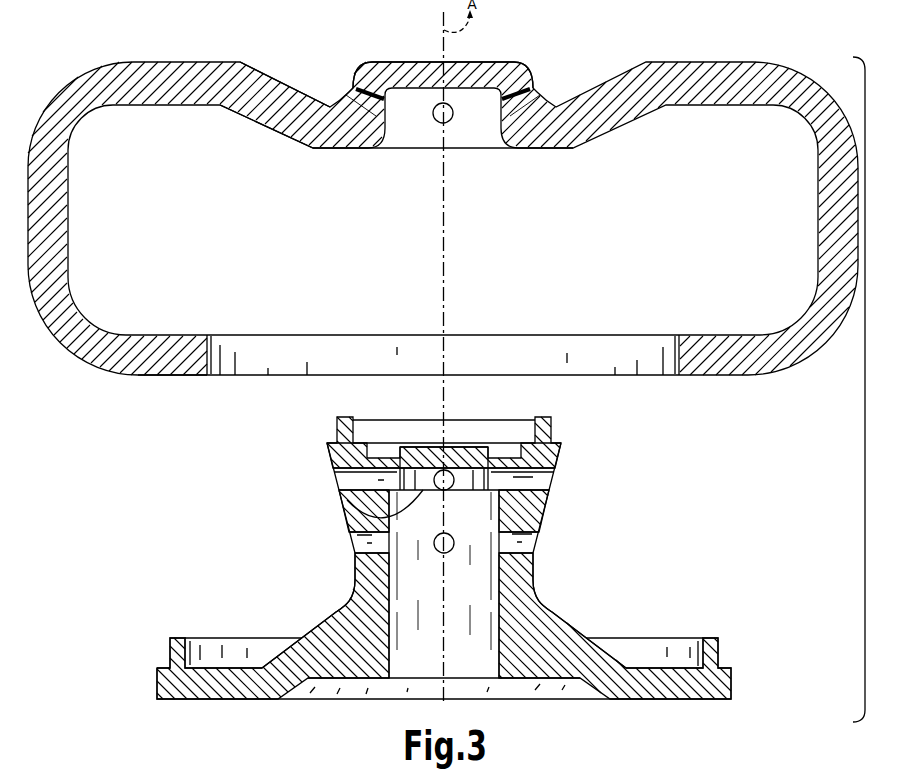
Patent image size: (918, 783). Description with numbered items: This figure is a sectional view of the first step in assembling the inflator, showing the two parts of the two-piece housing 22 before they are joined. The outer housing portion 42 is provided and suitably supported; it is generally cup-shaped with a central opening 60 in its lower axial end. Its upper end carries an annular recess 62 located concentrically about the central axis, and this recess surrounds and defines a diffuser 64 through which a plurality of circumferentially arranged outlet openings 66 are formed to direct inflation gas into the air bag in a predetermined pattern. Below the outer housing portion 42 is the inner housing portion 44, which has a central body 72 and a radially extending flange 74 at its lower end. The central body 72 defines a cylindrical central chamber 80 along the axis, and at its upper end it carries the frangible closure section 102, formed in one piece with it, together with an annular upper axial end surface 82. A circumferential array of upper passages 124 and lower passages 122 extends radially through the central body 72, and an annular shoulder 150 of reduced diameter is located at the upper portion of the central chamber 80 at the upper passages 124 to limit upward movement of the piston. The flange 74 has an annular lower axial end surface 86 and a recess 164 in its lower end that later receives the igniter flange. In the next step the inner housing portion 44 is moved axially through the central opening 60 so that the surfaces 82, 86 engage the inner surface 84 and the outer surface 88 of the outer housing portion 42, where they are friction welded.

The housing 22 is at (874, 389).
The outer housing portion 42 is at (765, 356).
The central opening 60 is at (676, 360).
The annular recess 62 is at (290, 88).
The diffuser 64 is at (408, 80).
The outlet openings 66 is at (350, 93).
The inner surface 84 is at (545, 150).
The outer surface 88 is at (188, 378).
The upper axial end surface 82 is at (542, 410).
The frangible closure section 102 is at (460, 456).
The annular shoulder 150 is at (347, 500).
The upper passages 124 is at (542, 480).
The lower passages 122 is at (535, 549).
The central body 72 is at (520, 610).
The inner housing portion 44 is at (580, 626).
The lower axial end surface 86 is at (708, 638).
The flange 74 is at (680, 684).
The recess 164 is at (517, 682).
The central chamber 80 is at (453, 641).